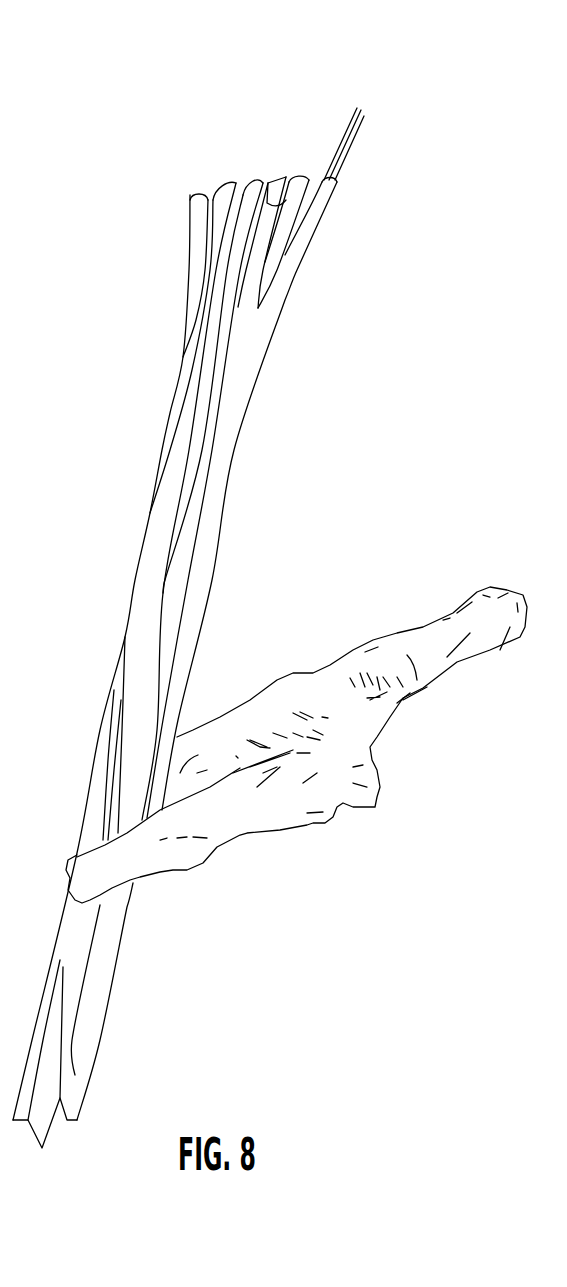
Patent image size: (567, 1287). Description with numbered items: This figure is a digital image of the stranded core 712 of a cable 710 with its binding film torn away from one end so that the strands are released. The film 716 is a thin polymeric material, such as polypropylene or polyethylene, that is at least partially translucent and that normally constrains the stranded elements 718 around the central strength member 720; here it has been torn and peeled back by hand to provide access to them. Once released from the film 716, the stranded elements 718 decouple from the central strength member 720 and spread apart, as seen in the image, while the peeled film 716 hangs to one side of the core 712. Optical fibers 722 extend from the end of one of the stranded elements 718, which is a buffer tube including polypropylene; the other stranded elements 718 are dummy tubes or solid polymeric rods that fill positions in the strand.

The cable 710 is at (142, 275).
The stranded core 712 is at (105, 997).
The film 716 is at (337, 807).
The stranded elements 718 is at (265, 200).
The central strength member 720 is at (285, 178).
The optical fibers 722 is at (363, 130).